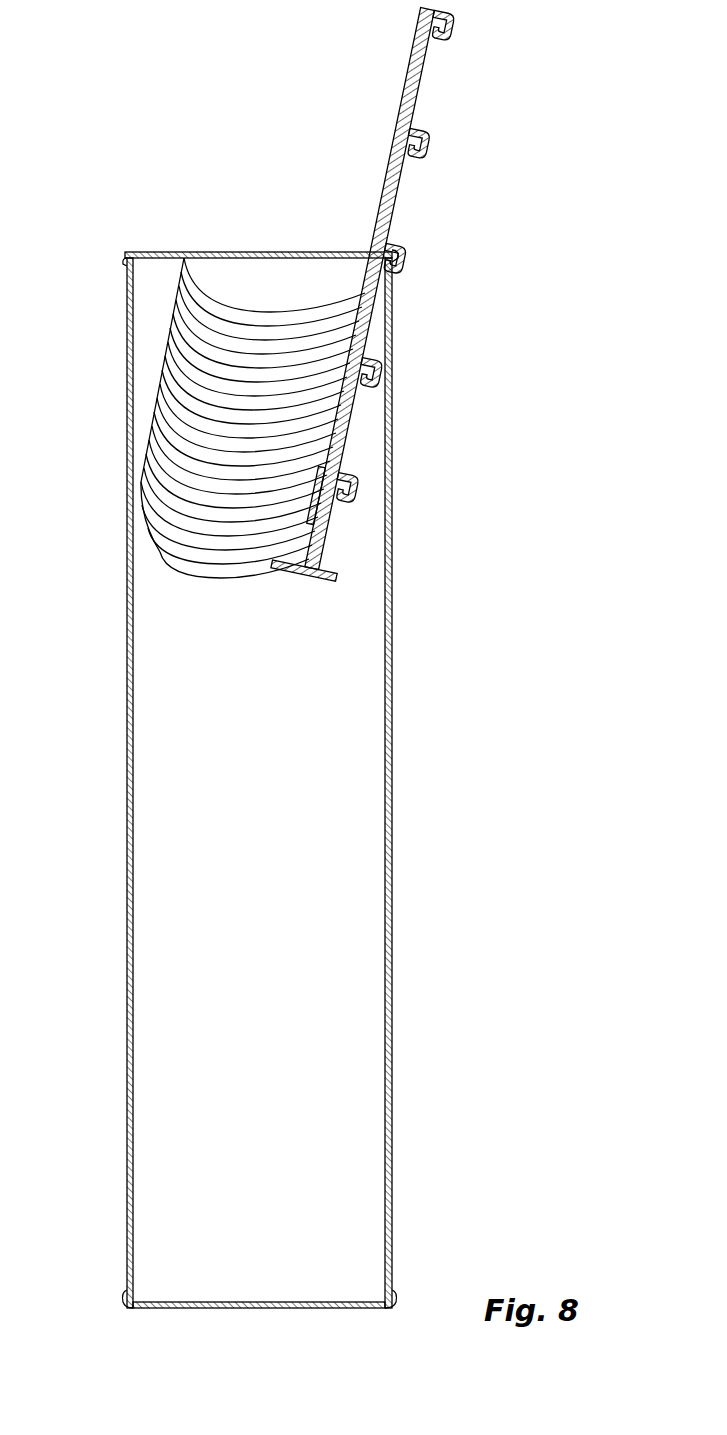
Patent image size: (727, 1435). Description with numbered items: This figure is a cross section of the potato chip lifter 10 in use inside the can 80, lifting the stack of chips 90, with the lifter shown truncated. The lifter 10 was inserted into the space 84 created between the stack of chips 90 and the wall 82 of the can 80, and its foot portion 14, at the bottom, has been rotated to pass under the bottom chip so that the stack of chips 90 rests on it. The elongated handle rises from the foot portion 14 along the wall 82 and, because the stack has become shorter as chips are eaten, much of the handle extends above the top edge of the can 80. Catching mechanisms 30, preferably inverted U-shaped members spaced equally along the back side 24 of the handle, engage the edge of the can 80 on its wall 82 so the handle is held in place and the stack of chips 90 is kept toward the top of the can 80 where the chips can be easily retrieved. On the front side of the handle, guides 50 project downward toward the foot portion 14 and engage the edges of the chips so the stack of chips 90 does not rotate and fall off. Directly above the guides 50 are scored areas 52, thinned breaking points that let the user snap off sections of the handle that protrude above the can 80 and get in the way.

The potato chip lifter 10 is at (378, 354).
The foot portion 14 is at (303, 660).
The back side 24 is at (368, 333).
The catching mechanisms 30 is at (398, 261).
The guides 50 is at (415, 505).
The scored areas 52 is at (390, 77).
The can 80 is at (266, 741).
The wall 82 is at (150, 307).
The space 84 is at (378, 432).
The stack of chips 90 is at (254, 310).